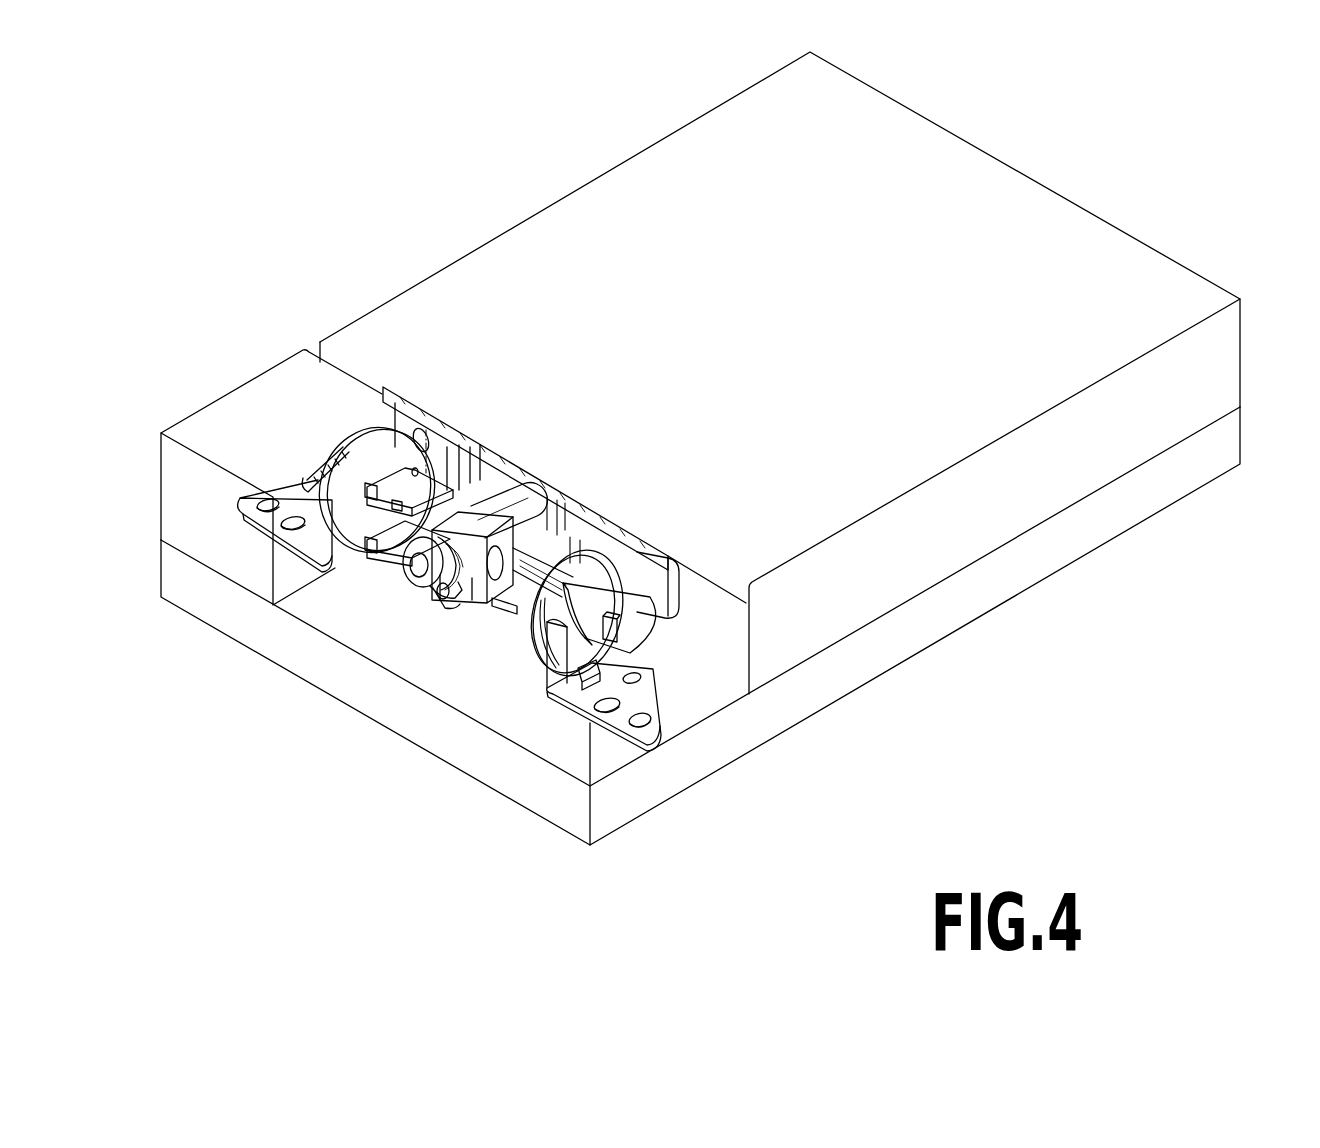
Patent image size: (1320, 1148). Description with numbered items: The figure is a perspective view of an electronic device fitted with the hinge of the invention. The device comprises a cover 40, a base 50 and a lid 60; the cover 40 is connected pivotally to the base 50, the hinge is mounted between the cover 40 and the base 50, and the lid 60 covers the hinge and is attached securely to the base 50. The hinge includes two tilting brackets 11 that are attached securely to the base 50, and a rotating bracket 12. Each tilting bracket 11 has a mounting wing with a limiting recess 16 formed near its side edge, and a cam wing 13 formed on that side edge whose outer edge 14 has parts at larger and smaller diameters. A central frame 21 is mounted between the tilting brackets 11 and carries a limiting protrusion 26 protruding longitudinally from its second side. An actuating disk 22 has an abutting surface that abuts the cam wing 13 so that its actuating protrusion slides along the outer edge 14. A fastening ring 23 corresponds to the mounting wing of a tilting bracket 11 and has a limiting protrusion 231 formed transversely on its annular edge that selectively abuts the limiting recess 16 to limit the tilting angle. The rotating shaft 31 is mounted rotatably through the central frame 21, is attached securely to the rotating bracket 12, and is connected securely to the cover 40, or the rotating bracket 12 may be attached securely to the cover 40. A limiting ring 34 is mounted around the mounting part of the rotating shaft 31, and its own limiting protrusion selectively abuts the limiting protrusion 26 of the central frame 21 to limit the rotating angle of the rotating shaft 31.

The tilting bracket 11 is at (493, 647).
The rotating bracket 12 is at (580, 513).
The cam wing 13 is at (667, 563).
The outer edge 14 is at (602, 570).
The limiting recess 16 is at (587, 673).
The central frame 21 is at (423, 497).
The actuating disk 22 is at (543, 628).
The fastening ring 23 is at (630, 627).
The limiting protrusion 231 is at (565, 632).
The limiting protrusion 26 is at (460, 498).
The rotating shaft 31 is at (525, 505).
The limiting ring 34 is at (426, 604).
The cover 40 is at (527, 256).
The base 50 is at (992, 584).
The lid 60 is at (248, 412).